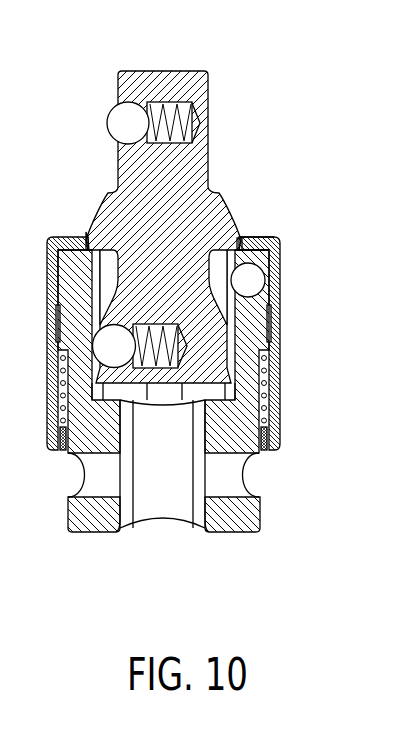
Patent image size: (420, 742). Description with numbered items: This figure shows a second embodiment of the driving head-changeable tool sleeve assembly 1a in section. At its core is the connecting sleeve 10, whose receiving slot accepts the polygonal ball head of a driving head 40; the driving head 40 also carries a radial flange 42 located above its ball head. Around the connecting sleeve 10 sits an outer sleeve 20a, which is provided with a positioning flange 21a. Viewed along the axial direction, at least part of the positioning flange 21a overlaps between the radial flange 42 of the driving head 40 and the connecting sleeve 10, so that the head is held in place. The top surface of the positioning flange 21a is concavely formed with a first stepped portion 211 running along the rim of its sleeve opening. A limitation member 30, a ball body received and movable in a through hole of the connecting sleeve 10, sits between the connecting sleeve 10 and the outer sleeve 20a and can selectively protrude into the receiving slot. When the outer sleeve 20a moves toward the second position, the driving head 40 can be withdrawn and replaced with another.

The driving head-changeable tool sleeve assembly 1a is at (300, 427).
The connecting sleeve 10 is at (248, 324).
The outer sleeve 20a is at (276, 368).
The positioning flange 21a is at (250, 247).
The first stepped portion 211 is at (86, 237).
The limitation member 30 is at (255, 278).
The driving head 40 is at (142, 82).
The radial flange 42 is at (242, 244).